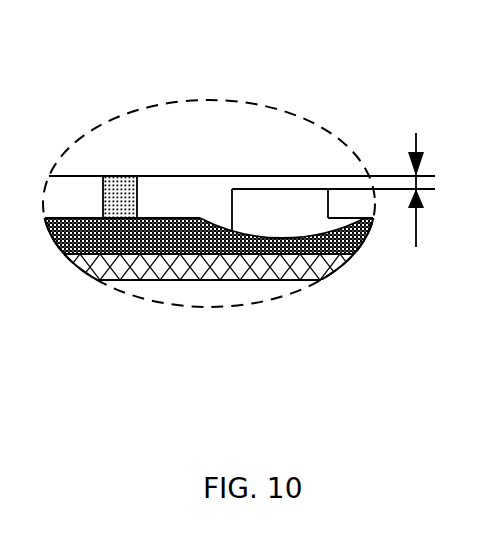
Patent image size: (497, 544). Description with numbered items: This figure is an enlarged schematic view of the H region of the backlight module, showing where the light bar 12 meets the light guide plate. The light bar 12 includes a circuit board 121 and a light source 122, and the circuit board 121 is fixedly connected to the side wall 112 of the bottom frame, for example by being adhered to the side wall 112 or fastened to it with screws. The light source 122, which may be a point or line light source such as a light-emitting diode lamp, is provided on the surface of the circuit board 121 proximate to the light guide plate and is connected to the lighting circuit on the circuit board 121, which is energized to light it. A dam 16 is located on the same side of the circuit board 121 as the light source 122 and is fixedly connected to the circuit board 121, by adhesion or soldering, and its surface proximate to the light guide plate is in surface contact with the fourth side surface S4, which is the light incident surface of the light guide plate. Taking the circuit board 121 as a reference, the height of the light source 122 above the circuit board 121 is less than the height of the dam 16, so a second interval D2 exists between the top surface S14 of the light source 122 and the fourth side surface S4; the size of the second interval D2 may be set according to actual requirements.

The H region H is at (56, 50).
The fourth side surface S4 is at (167, 176).
The top surface S14 is at (278, 189).
The second interval D2 is at (435, 190).
The dam 16 is at (124, 209).
The side wall 112 is at (140, 270).
The circuit board 121 is at (208, 240).
The light source 122 is at (270, 213).
The light bar 12 is at (372, 362).